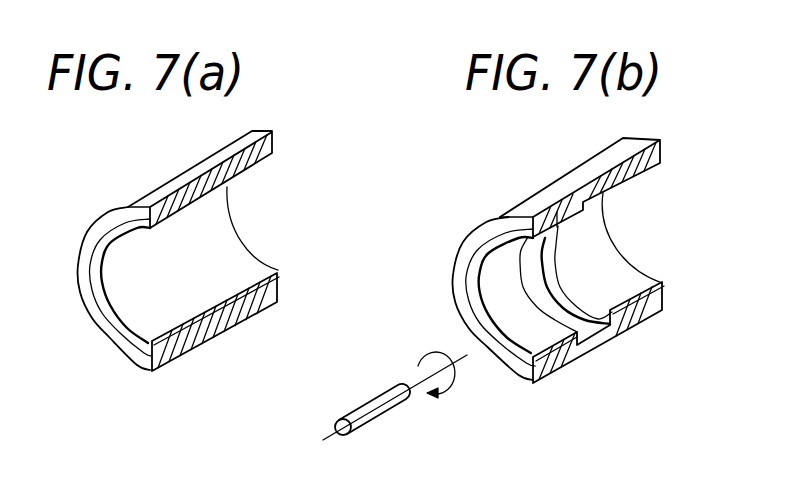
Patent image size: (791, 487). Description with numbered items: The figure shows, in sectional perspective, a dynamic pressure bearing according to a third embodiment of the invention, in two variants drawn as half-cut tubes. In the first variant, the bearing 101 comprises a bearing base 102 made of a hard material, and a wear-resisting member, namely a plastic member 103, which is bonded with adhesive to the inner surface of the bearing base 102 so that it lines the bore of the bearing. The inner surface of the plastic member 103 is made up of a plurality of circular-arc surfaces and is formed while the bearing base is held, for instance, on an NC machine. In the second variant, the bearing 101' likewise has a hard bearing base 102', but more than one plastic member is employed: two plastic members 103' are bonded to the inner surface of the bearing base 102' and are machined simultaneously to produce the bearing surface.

The bearing 101 is at (97, 270).
The bearing base 102 is at (235, 238).
The plastic member 103 is at (273, 228).
The bearing 101' is at (490, 274).
The bearing base 102' is at (582, 249).
The plastic members 103' is at (615, 296).